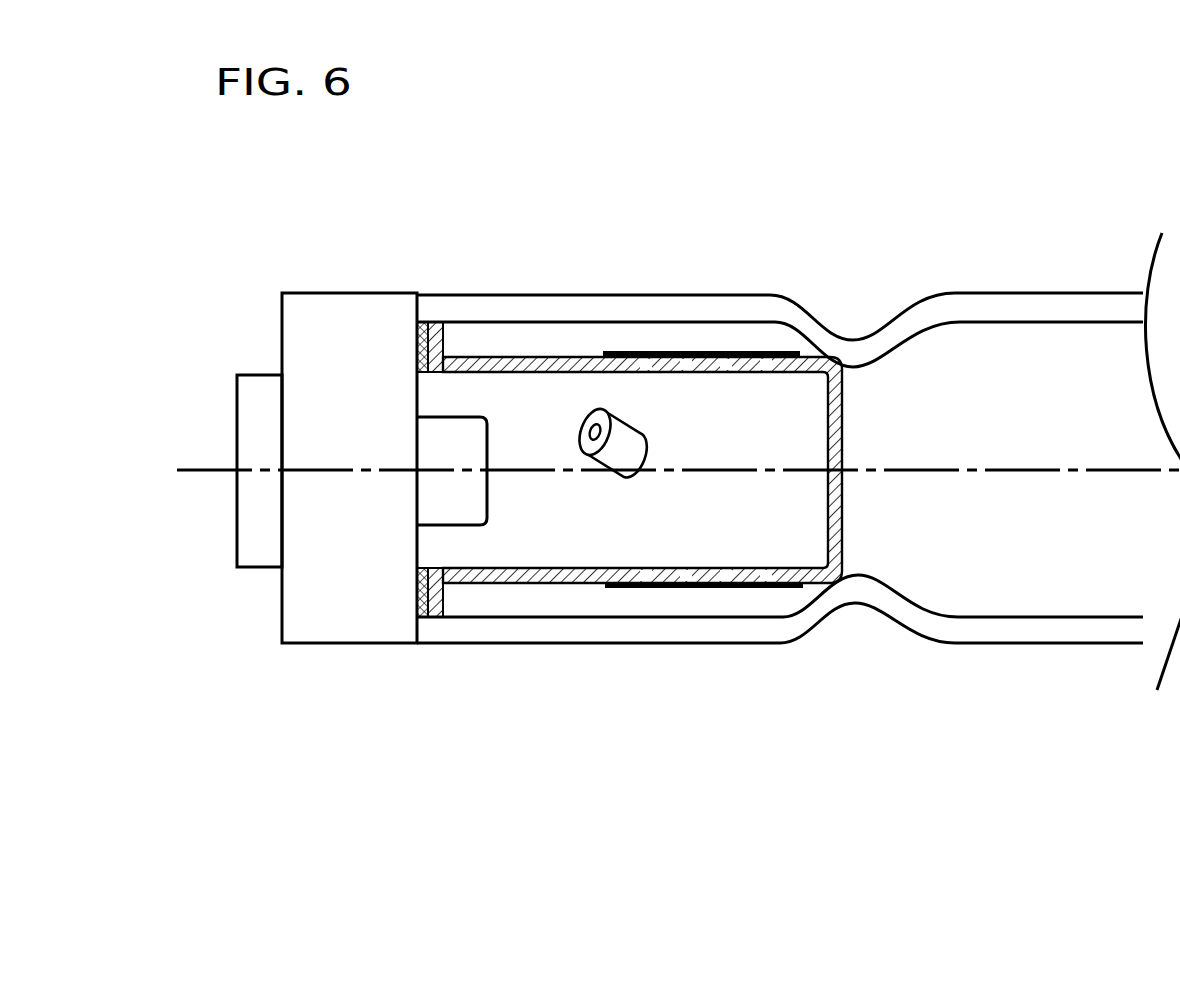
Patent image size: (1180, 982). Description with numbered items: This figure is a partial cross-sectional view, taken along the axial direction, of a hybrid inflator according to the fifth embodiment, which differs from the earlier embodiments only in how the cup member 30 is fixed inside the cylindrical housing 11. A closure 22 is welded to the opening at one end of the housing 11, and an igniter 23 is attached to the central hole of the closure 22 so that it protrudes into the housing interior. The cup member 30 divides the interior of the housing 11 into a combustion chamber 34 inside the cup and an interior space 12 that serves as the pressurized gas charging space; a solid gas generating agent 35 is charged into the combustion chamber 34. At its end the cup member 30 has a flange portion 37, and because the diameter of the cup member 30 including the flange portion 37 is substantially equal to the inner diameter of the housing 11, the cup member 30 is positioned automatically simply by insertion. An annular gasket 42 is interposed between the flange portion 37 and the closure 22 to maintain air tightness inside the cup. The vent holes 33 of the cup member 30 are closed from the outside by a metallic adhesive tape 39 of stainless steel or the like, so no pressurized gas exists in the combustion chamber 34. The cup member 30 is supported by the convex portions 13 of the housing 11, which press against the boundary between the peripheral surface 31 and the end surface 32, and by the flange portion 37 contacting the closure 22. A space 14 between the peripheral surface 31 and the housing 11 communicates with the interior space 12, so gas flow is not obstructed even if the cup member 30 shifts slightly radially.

The cylindrical housing 11 is at (1045, 303).
The interior space 12 is at (1122, 581).
The convex portions 13 is at (858, 368).
The space 14 is at (765, 600).
The closure 22 is at (307, 346).
The igniter 23 is at (258, 533).
The cup member 30 is at (506, 590).
The peripheral surface 31 is at (590, 585).
The end surface 32 is at (848, 511).
The vent holes 33 is at (700, 590).
The combustion chamber 34 is at (604, 546).
The solid gas generating agent 35 is at (640, 424).
The flange portion 37 is at (445, 345).
The metallic adhesive tape 39 is at (715, 352).
The annular gasket 42 is at (418, 346).